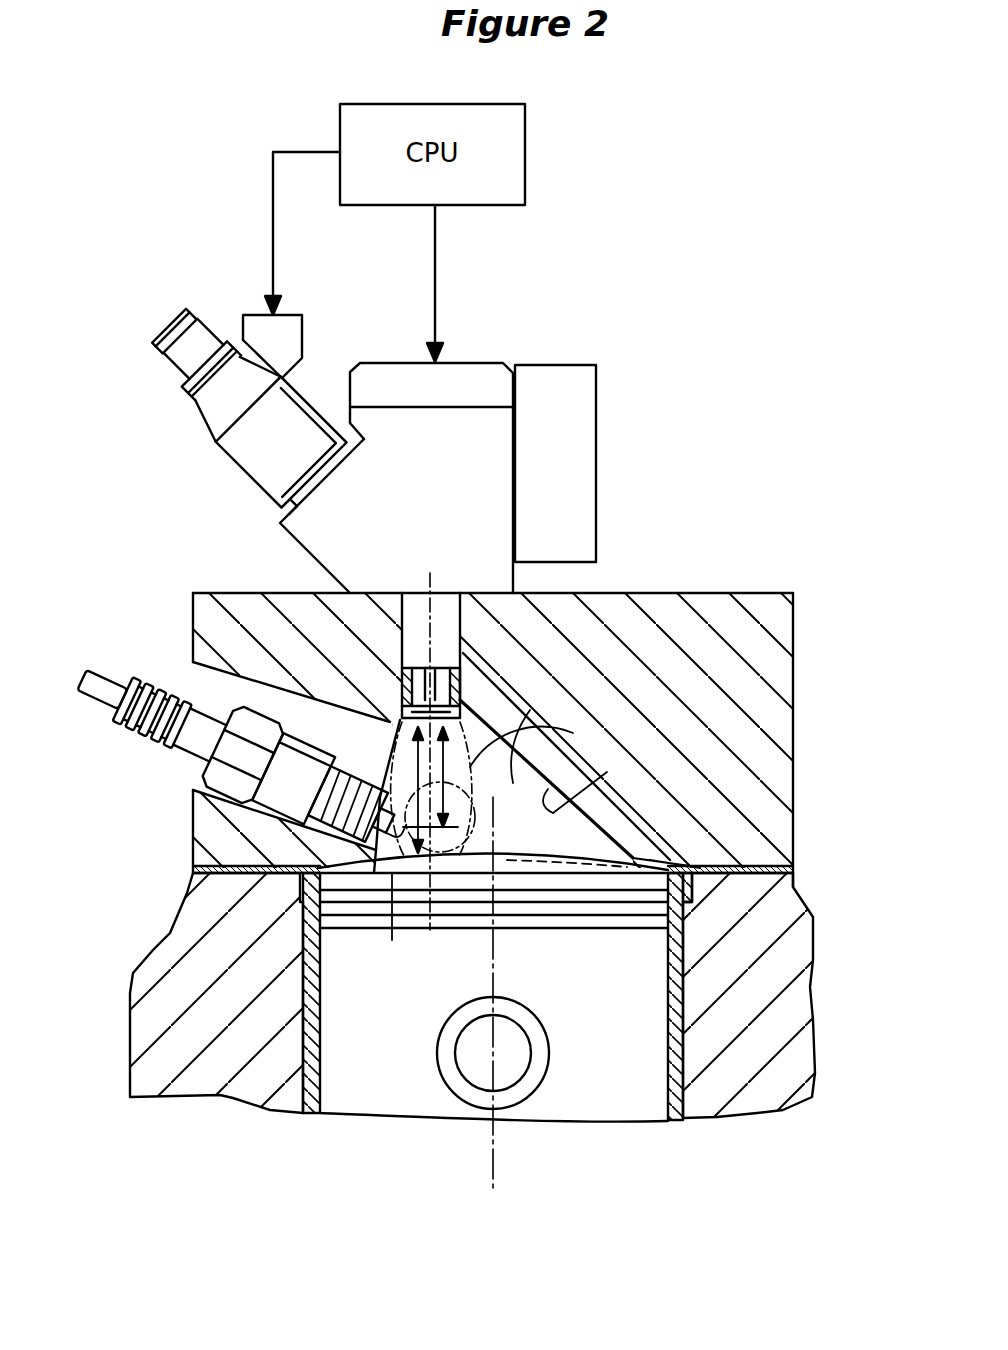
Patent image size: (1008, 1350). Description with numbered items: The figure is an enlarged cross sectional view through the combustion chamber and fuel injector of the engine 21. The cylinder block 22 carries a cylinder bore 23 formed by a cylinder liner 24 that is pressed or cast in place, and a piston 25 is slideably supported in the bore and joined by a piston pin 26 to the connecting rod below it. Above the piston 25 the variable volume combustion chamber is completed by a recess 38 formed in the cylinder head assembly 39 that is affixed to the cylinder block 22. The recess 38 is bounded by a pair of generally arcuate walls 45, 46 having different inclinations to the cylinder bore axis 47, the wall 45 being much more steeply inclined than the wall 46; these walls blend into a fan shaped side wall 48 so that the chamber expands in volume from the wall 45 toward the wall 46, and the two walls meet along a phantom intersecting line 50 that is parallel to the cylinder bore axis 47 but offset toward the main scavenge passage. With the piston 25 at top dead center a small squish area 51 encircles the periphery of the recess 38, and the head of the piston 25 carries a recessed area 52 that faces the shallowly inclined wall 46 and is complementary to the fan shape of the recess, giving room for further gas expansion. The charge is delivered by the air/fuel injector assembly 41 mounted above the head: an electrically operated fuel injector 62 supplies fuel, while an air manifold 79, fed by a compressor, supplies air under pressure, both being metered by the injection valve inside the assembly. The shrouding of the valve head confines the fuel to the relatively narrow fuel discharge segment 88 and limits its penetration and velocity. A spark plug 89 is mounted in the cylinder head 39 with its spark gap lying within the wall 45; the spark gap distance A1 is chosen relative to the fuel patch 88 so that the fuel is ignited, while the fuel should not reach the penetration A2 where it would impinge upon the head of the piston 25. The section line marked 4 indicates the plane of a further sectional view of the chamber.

The engine 21 is at (693, 531).
The cylinder block 22 is at (795, 1017).
The cylinder bore 23 is at (680, 951).
The cylinder liner 24 is at (677, 1047).
The piston 25 is at (651, 1108).
The piston pin 26 is at (538, 1012).
The recess 38 is at (553, 845).
The cylinder head assembly 39 is at (796, 748).
The air/fuel injector assembly 41 is at (596, 472).
The wall 45 is at (400, 720).
The wall 46 is at (594, 781).
The cylinder bore axis 47 is at (487, 973).
The side wall 48 is at (621, 751).
The intersecting line 50 is at (432, 583).
The squish area 51 is at (698, 840).
The recessed area 52 is at (592, 866).
The fuel injector 62 is at (203, 416).
The air manifold 79 is at (596, 400).
The fuel discharge segment 88 is at (582, 711).
The spark plug 89 is at (182, 746).
The spark gap distance A1 is at (441, 789).
The penetration A2 is at (385, 925).
The section line 4- 4 is at (398, 442).